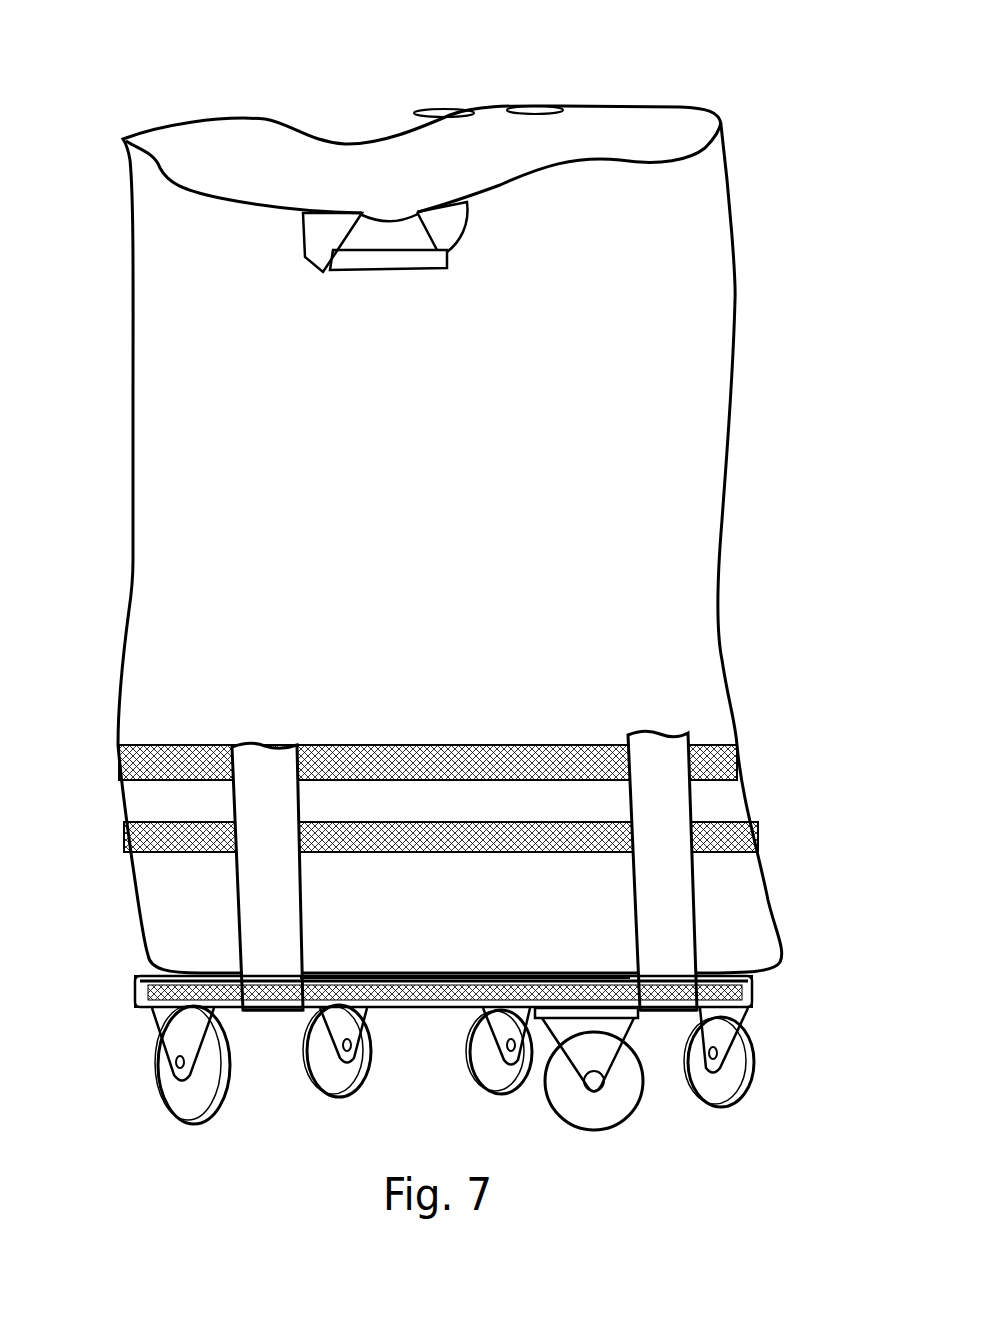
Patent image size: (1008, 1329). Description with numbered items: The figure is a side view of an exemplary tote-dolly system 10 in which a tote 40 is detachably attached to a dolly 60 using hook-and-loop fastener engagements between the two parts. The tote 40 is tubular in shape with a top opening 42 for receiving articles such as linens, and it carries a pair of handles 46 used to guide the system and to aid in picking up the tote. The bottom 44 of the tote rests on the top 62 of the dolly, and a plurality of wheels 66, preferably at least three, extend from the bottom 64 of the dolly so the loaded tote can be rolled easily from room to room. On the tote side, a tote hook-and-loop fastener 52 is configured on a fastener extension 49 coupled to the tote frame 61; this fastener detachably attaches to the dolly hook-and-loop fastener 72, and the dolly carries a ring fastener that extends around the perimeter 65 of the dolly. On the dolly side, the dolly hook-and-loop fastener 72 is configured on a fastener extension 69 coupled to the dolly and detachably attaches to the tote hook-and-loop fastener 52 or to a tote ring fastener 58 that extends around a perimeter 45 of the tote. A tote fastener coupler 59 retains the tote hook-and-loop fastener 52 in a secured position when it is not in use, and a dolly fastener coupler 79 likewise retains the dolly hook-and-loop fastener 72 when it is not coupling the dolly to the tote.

The tote-dolly system 10 is at (136, 103).
The tote 40 is at (690, 286).
The top opening 42 is at (277, 173).
The bottom of the tote 44 is at (757, 983).
The perimeter of the tote 45 is at (697, 485).
The handles 46 is at (390, 258).
The fastener extension 49 is at (257, 943).
The tote hook-and-loop fastener 52 is at (265, 1000).
The tote ring fastener 58 is at (462, 752).
The tote fastener coupler 59 is at (515, 855).
The dolly 60 is at (490, 979).
The tote frame 61 is at (133, 995).
The top of the dolly 62 is at (135, 970).
The bottom of the dolly 64 is at (410, 1010).
The perimeter of the dolly 65 is at (757, 1010).
The wheels 66 is at (175, 1101).
The fastener extension 69 is at (679, 958).
The dolly hook-and-loop fastener 72 is at (652, 750).
The dolly fastener coupler 79 is at (430, 978).